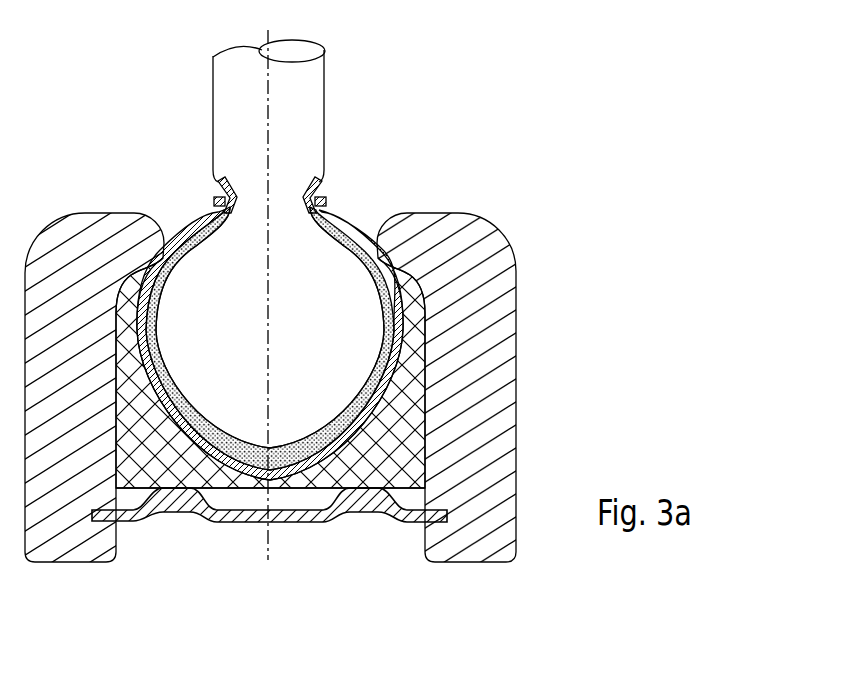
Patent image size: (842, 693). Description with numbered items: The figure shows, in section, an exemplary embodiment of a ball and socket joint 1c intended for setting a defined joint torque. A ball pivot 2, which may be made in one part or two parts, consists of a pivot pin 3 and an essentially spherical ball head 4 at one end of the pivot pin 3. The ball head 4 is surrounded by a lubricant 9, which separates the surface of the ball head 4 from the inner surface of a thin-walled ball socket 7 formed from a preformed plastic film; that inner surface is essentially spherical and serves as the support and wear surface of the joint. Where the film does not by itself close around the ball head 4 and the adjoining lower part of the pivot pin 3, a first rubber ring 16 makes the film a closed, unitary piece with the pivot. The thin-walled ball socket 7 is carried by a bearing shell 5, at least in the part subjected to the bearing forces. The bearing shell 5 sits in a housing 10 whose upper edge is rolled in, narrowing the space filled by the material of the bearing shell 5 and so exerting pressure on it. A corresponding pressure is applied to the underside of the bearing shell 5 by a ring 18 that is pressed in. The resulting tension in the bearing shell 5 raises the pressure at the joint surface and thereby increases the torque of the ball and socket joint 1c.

The ball and socket joint 1c is at (388, 57).
The ball pivot 2 is at (214, 68).
The pivot pin 3 is at (318, 87).
The ball head 4 is at (333, 253).
The bearing shell 5 is at (408, 431).
The thin-walled ball socket 7 is at (425, 360).
The lubricant 9 is at (205, 215).
The housing 10 is at (500, 308).
The first rubber ring 16 is at (327, 195).
The ring 18 is at (240, 522).